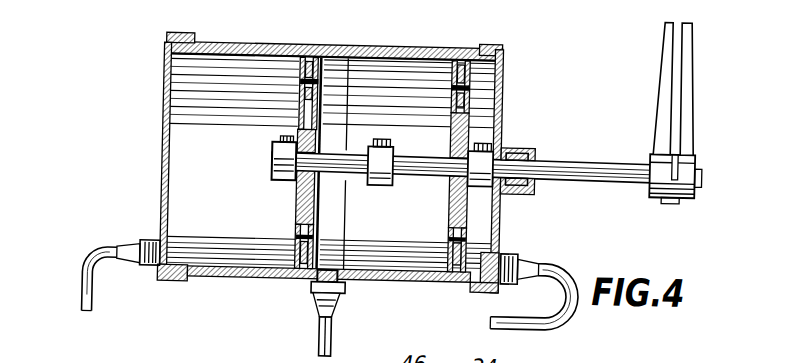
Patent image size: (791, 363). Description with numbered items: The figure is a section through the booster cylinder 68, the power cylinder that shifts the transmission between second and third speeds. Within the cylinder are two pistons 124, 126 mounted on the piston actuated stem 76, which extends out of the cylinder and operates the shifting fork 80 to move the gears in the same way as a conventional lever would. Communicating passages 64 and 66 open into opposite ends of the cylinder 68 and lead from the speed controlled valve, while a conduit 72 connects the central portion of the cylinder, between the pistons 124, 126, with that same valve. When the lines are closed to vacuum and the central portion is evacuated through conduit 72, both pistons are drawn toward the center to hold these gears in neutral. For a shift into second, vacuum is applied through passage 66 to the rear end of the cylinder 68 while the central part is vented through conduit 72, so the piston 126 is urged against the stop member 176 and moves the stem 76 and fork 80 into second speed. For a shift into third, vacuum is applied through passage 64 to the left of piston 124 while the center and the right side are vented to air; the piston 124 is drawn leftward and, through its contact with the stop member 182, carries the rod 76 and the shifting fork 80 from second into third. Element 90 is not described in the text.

The booster cylinder 68 is at (338, 48).
The stop member 182 is at (278, 153).
The piston 124 is at (301, 198).
The piston 126 is at (456, 189).
The stop member 176 is at (485, 158).
The piston actuated stem 76 is at (573, 166).
The shifting fork 80 is at (684, 109).
The communicating passage 64 is at (91, 286).
The communicating passage 66 is at (577, 316).
The conduit 72 is at (334, 330).
The conduit 90 is at (216, 362).